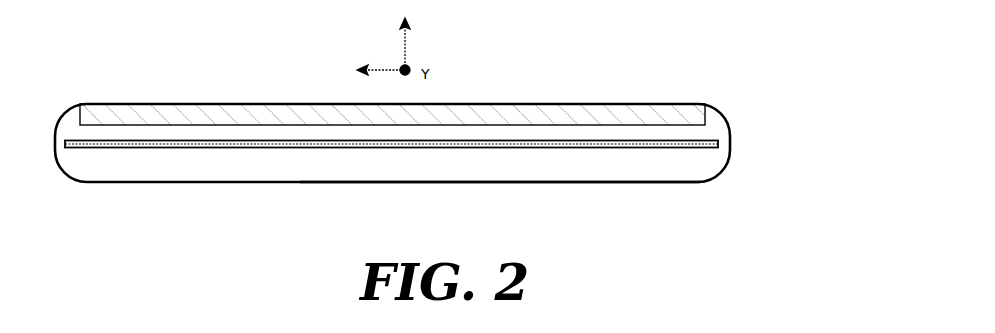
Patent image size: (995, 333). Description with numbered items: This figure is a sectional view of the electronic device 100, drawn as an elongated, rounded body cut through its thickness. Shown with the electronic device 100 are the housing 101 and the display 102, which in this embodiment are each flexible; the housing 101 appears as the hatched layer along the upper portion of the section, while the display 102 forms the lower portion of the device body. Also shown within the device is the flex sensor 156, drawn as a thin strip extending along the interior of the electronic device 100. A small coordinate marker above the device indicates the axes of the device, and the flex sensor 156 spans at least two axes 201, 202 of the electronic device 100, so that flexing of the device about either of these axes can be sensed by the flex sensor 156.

The electronic device 100 is at (738, 140).
The housing 101 is at (585, 110).
The display 102 is at (605, 184).
The flex sensor 156 is at (100, 148).
The axis 201 is at (393, 68).
The axis 202 is at (408, 60).